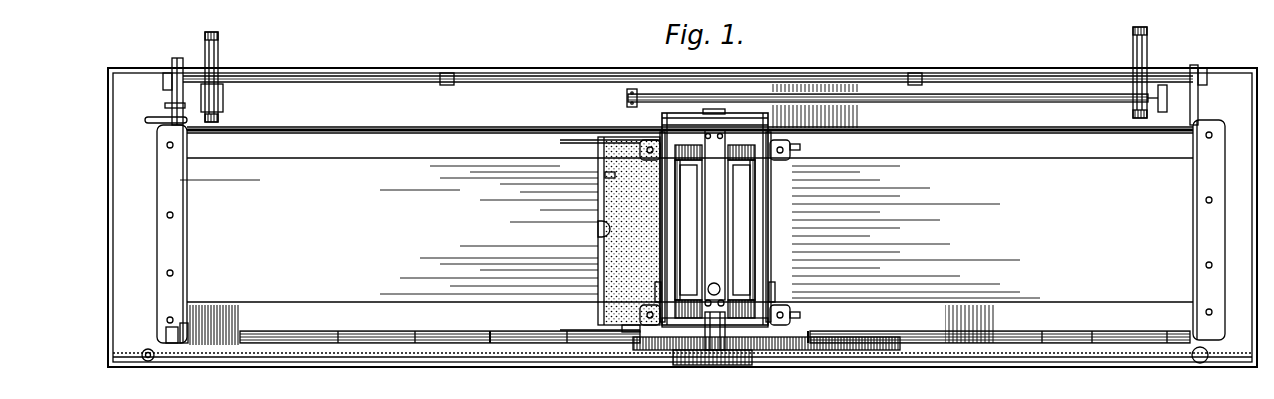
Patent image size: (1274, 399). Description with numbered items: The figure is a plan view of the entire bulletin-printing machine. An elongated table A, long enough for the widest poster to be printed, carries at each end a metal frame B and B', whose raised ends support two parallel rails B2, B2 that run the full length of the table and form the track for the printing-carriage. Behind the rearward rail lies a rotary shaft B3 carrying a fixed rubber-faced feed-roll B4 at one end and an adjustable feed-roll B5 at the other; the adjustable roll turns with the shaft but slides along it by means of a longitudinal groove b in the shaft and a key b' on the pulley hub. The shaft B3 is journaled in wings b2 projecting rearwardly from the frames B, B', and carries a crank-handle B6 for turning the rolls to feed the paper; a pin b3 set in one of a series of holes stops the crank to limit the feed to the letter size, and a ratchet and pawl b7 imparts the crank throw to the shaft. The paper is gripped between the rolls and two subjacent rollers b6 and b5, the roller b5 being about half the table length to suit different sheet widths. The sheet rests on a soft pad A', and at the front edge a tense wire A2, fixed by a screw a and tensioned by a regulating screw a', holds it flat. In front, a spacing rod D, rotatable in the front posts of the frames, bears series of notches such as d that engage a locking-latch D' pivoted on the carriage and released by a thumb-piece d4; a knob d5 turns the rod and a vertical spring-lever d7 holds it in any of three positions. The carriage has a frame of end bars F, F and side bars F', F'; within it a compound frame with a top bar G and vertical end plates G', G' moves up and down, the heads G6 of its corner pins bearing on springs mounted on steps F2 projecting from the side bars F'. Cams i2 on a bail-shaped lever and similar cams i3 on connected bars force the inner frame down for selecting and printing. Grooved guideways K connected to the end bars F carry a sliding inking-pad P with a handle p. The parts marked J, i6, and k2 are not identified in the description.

The table A is at (682, 232).
The pad A' is at (690, 230).
The tense wire or cable A2 is at (398, 360).
The metal frame B is at (153, 234).
The metal frame B' is at (1191, 230).
The rail B2 is at (368, 132).
The rotary shaft B3 is at (447, 78).
The fixed feed-roll B4 is at (219, 52).
The adjustable feed-roll B5 is at (1133, 38).
The crank-handle B6 is at (150, 122).
The longitudinal groove b is at (688, 64).
The key b' is at (1171, 83).
The wing b2 is at (163, 80).
The pin b3 is at (165, 105).
The subjacent roller b5 is at (806, 94).
The subjacent roller b6 is at (224, 100).
The ratchet and pawl b7 is at (177, 60).
The spacing rod D is at (715, 364).
The locking-latch D' is at (766, 358).
The series of notches d is at (491, 338).
The thumb-piece d4 is at (628, 330).
The knob d5 is at (168, 337).
The vertical spring-lever d7 is at (184, 323).
The screw a is at (144, 374).
The tension-regulating screw a' is at (1193, 373).
The end bar F is at (720, 253).
The side bar F' is at (714, 214).
The step F2 is at (786, 160).
The top bar G is at (715, 218).
The vertical end plate G' is at (720, 220).
The head G6 is at (605, 176).
The cam i2 is at (655, 137).
The cam i3 is at (653, 287).
The stud i6 is at (800, 316).
The post J is at (716, 350).
The grooved guideway K is at (580, 143).
The ball k2 is at (715, 283).
The inking-pad P is at (629, 231).
The handle p is at (596, 230).